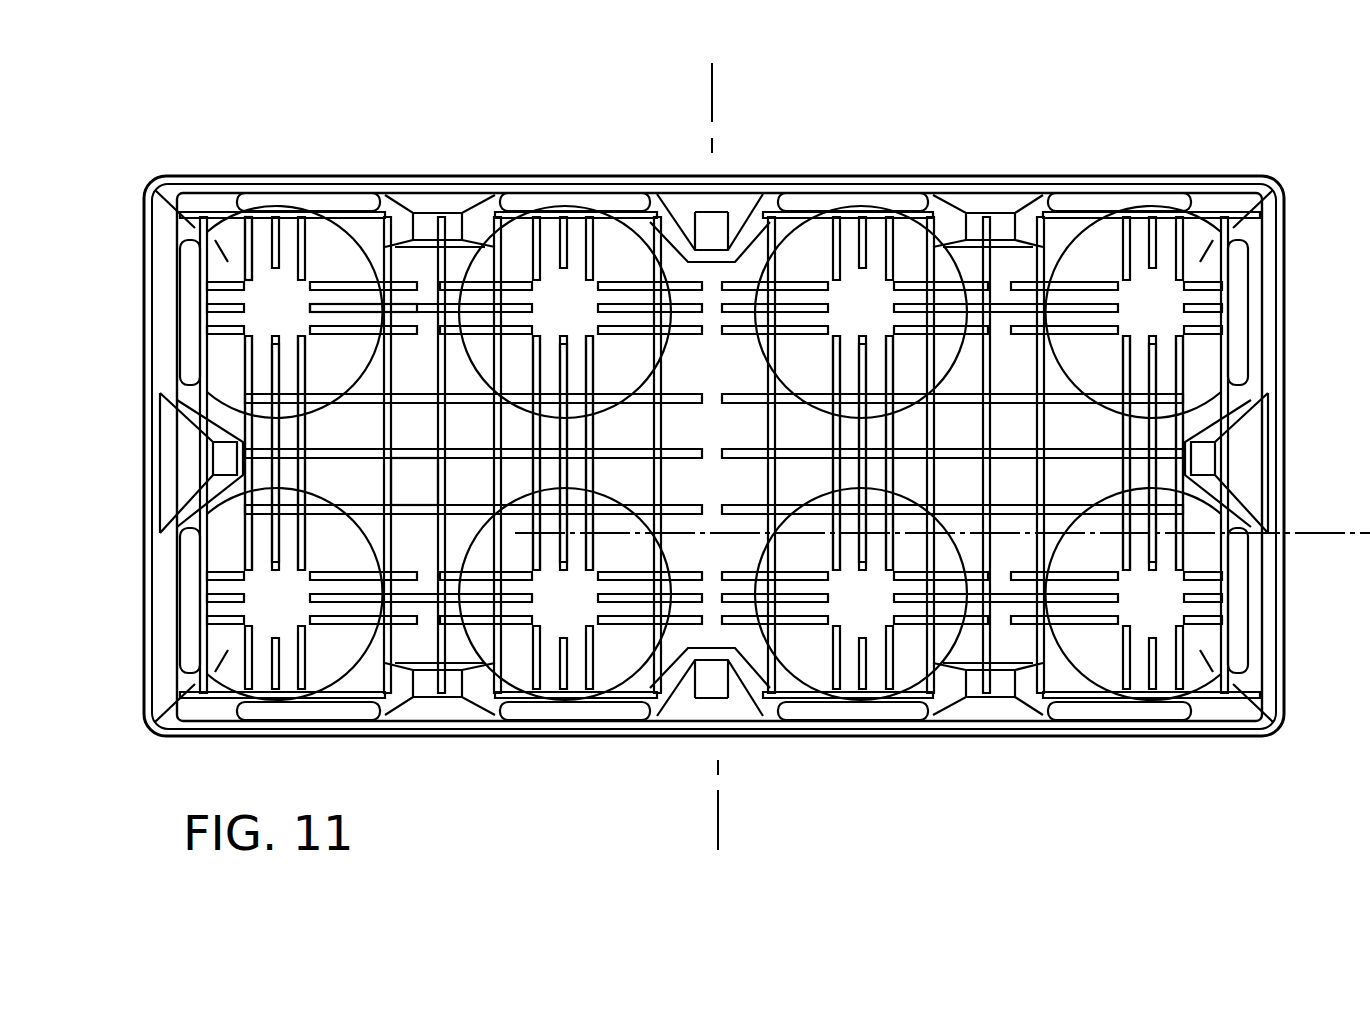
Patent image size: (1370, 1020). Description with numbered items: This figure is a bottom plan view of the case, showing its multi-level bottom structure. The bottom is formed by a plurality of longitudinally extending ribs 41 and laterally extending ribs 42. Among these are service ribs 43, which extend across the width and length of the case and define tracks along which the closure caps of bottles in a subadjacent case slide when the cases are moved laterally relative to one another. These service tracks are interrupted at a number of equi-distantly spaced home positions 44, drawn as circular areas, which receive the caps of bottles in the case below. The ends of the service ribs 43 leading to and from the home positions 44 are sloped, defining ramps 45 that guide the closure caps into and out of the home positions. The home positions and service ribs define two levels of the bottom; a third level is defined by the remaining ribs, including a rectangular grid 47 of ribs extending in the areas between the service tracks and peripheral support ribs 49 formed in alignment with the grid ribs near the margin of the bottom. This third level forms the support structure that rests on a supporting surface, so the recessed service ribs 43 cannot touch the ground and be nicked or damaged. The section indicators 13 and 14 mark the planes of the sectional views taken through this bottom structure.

The longitudinally extending ribs 41 is at (340, 510).
The laterally extending ribs 42 is at (502, 400).
The service ribs 43 is at (285, 262).
The home positions 44 is at (263, 321).
The ramps 45 is at (323, 300).
The rectangular grid of ribs 47 is at (416, 490).
The peripheral support ribs 49 is at (482, 250).
The section line 13- 13 is at (1326, 520).
The section line 14- 14 is at (745, 828).